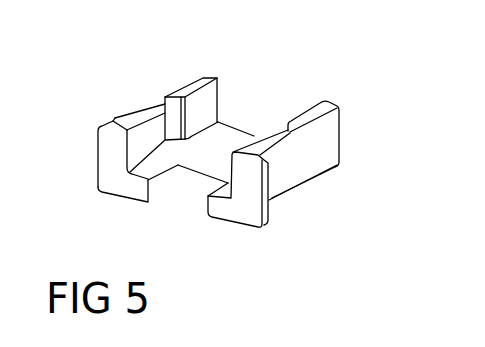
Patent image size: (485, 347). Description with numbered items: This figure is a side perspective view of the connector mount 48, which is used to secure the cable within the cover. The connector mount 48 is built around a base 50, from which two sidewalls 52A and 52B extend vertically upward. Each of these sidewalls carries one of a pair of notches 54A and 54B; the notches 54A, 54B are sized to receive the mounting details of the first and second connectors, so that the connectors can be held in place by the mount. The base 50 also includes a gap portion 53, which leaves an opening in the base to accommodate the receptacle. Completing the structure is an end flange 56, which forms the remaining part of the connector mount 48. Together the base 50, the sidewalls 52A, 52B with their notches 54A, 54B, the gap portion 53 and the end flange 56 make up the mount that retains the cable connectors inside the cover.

The connector mount 48 is at (134, 63).
The base 50 is at (215, 161).
The sidewall 52A is at (322, 103).
The sidewall 52B is at (205, 77).
The gap portion 53 is at (163, 183).
The notch 54A is at (296, 132).
The notch 54B is at (150, 105).
The end flange 56 is at (245, 217).